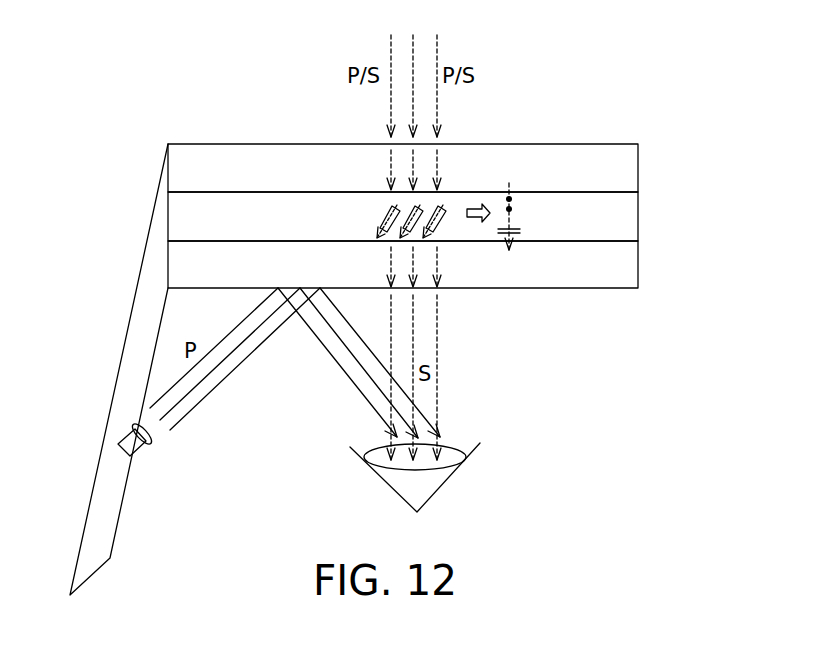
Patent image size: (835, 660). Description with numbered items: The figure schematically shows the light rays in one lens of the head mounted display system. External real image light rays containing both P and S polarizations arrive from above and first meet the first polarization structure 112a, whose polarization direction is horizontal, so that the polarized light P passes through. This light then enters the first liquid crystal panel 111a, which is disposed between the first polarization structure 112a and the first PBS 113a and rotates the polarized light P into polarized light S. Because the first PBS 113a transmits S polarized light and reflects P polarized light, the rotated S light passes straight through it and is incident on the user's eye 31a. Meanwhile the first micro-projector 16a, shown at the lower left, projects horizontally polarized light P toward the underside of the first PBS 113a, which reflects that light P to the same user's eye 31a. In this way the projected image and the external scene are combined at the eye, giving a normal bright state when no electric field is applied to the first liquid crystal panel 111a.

The first polarization structure 112a is at (625, 173).
The first liquid crystal panel 111a is at (625, 222).
The first polarizing beam splitter (PBS) 113a is at (625, 270).
The first micro-projector 16a is at (133, 447).
The user's eye 31a is at (432, 485).